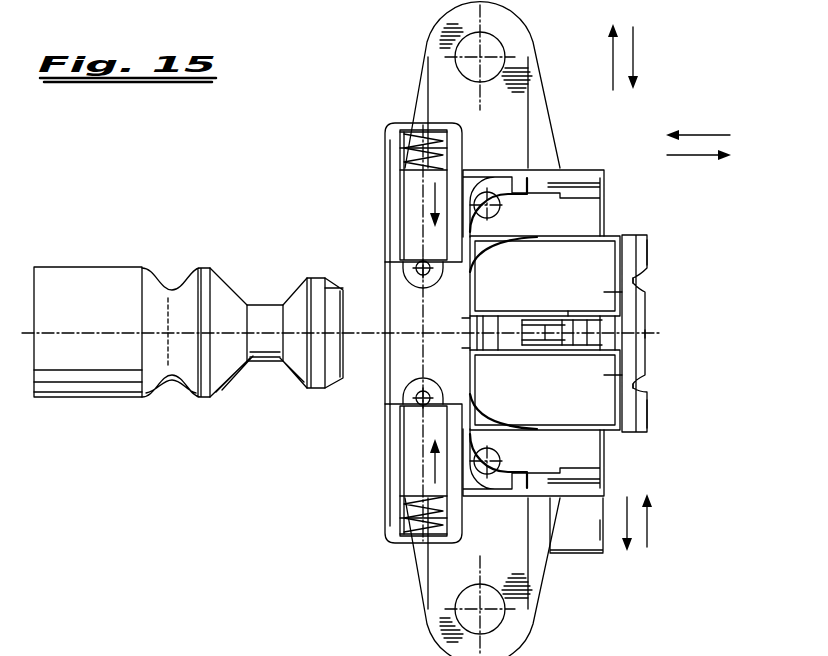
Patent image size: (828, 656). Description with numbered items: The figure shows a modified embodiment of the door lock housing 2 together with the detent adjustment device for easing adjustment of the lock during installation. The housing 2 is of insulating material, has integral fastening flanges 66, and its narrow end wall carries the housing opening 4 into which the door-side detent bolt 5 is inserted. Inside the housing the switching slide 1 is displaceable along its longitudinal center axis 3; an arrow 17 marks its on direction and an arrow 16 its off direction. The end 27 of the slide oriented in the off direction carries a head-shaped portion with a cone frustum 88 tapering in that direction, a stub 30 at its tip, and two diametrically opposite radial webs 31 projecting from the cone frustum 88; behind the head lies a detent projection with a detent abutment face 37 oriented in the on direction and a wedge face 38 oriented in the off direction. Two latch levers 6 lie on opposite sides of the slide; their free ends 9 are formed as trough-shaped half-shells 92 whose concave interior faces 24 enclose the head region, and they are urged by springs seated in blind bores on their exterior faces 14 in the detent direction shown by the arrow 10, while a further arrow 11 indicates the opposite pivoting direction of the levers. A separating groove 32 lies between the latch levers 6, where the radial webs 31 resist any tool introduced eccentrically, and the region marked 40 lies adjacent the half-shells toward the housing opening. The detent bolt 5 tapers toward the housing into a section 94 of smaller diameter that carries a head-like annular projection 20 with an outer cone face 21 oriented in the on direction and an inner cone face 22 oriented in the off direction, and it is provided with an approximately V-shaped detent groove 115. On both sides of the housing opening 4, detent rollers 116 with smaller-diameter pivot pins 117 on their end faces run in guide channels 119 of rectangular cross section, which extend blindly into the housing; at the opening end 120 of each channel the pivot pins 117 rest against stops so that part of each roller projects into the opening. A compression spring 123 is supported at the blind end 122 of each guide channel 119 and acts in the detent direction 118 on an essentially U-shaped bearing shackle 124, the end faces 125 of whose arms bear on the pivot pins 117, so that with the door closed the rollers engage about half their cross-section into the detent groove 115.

The switching slide 1 is at (649, 352).
The door lock housing 2 is at (597, 170).
The longitudinal center axis 3 is at (78, 330).
The housing opening 4 is at (366, 374).
The detent bolt 5 is at (96, 280).
The latch levers 6 is at (648, 250).
The free ends 9 is at (560, 252).
The detent direction 10 is at (637, 50).
The direction of movement 11 is at (612, 67).
The exterior faces 14 is at (638, 233).
The off direction 16 is at (706, 134).
The on direction 17 is at (690, 156).
The annular projection 20 is at (318, 272).
The outer cone face 21 is at (333, 280).
The inner cone face 22 is at (287, 293).
The interior faces 24 is at (634, 279).
The end 27 is at (575, 350).
The stub 30 is at (500, 348).
The radial webs 31 is at (517, 352).
The separating groove 32 is at (468, 323).
The detent abutment face 37 is at (598, 312).
The wedge face 38 is at (570, 312).
The opening 40 is at (603, 330).
The fastening flanges 66 is at (513, 625).
The cone frustum 88 is at (553, 352).
The half-shells 92 is at (603, 203).
The section 94 is at (257, 306).
The detent groove 115 is at (161, 283).
The detent rollers 116 is at (400, 277).
The pivot pins 117 is at (415, 257).
The detent direction 118 is at (457, 185).
The guide channels 119 is at (400, 157).
The opening end 120 is at (468, 272).
The blind end 122 is at (437, 132).
The compression spring 123 is at (402, 127).
The bearing shackle 124 is at (408, 187).
The end faces 125 is at (438, 272).